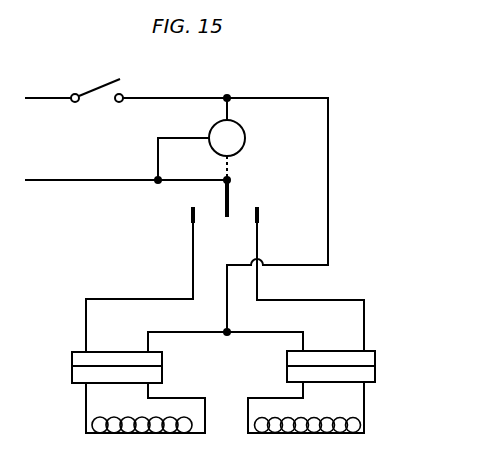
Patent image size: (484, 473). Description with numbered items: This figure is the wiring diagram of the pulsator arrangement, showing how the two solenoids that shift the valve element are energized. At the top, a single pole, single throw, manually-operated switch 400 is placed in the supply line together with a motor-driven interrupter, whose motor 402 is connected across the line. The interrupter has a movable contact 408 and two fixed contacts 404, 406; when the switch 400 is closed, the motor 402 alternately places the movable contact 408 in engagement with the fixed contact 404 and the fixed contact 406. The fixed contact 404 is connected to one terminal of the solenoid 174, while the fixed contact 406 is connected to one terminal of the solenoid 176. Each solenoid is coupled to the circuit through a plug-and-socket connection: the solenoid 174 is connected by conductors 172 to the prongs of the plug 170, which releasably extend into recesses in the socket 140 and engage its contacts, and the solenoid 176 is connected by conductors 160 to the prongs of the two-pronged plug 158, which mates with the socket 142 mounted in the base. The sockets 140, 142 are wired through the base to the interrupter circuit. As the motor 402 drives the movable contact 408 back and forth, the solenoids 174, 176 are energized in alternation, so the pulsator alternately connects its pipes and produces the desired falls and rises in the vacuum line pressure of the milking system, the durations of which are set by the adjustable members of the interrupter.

The switch 400 is at (99, 80).
The motor 402 is at (247, 131).
The fixed contact 404 is at (190, 218).
The fixed contact 406 is at (261, 217).
The movable contact 408 is at (229, 193).
The socket 140 is at (73, 352).
The socket 142 is at (376, 351).
The plug 170 is at (72, 384).
The two-pronged plug 158 is at (377, 383).
The conductors 172 is at (83, 418).
The conductors 160 is at (365, 402).
The solenoid 174 is at (110, 433).
The solenoid 176 is at (293, 434).